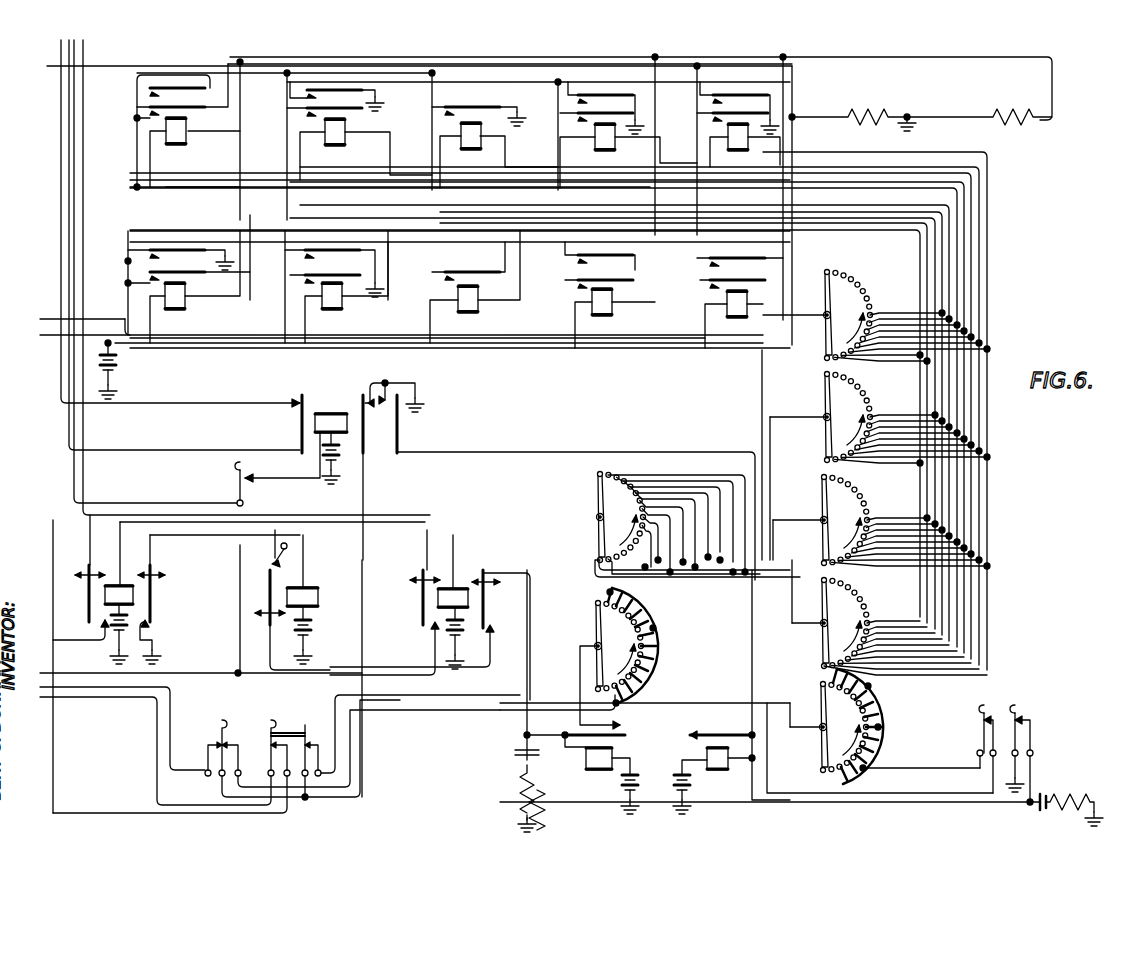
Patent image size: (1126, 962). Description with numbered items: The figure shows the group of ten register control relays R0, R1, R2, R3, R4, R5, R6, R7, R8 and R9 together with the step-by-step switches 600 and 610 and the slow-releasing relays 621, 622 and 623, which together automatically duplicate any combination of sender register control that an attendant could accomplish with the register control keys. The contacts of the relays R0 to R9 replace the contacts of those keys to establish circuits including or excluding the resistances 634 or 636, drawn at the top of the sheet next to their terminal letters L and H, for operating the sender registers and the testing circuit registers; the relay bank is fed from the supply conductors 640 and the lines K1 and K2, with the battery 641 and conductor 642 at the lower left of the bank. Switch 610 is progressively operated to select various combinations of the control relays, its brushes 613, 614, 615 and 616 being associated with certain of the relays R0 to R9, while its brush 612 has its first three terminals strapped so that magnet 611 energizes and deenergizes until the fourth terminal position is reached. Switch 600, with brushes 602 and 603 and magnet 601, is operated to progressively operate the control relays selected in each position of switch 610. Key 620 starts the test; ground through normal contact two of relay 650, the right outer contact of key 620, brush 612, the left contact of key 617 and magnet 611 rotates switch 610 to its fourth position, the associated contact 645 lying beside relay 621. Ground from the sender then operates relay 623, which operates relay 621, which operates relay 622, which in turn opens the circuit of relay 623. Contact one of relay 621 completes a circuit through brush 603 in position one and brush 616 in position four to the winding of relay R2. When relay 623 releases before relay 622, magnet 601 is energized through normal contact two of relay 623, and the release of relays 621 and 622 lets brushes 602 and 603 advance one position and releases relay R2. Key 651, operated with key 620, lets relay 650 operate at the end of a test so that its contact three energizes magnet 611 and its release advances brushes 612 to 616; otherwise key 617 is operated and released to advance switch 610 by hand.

The conductor bus 640 is at (112, 62).
The relay K1 line K1 is at (158, 68).
The relay K2 line K2 is at (89, 319).
The battery 641 is at (112, 349).
The conductor 642 is at (154, 346).
The register control relay R0 is at (187, 142).
The register control relay R1 is at (344, 140).
The register control relay R2 is at (478, 144).
The register control relay R3 is at (614, 144).
The register control relay R4 is at (748, 137).
The register control relay R5 is at (729, 322).
The register control relay R6 is at (618, 310).
The register control relay R7 is at (484, 310).
The register control relay R8 is at (350, 308).
The register control relay R9 is at (189, 306).
The resistance 634 is at (868, 103).
The resistance 636 is at (1003, 112).
The low terminal L is at (859, 136).
The high terminal H is at (1011, 136).
The relay 650 is at (333, 408).
The key 651 is at (242, 482).
The switch 600 is at (579, 465).
The brush 603 is at (594, 546).
The brush 602 is at (595, 625).
The magnet 601 is at (599, 772).
The magnet 611 is at (722, 772).
The switch 610 is at (876, 460).
The brush 616 is at (826, 338).
The brush 615 is at (826, 440).
The brush 614 is at (824, 542).
The brush 613 is at (824, 645).
The brush 612 is at (820, 750).
The key 617 is at (801, 755).
The relay contact 645 is at (81, 664).
The relay 621 is at (133, 595).
The relay 622 is at (310, 588).
The relay 623 is at (430, 663).
The key 620 is at (280, 743).